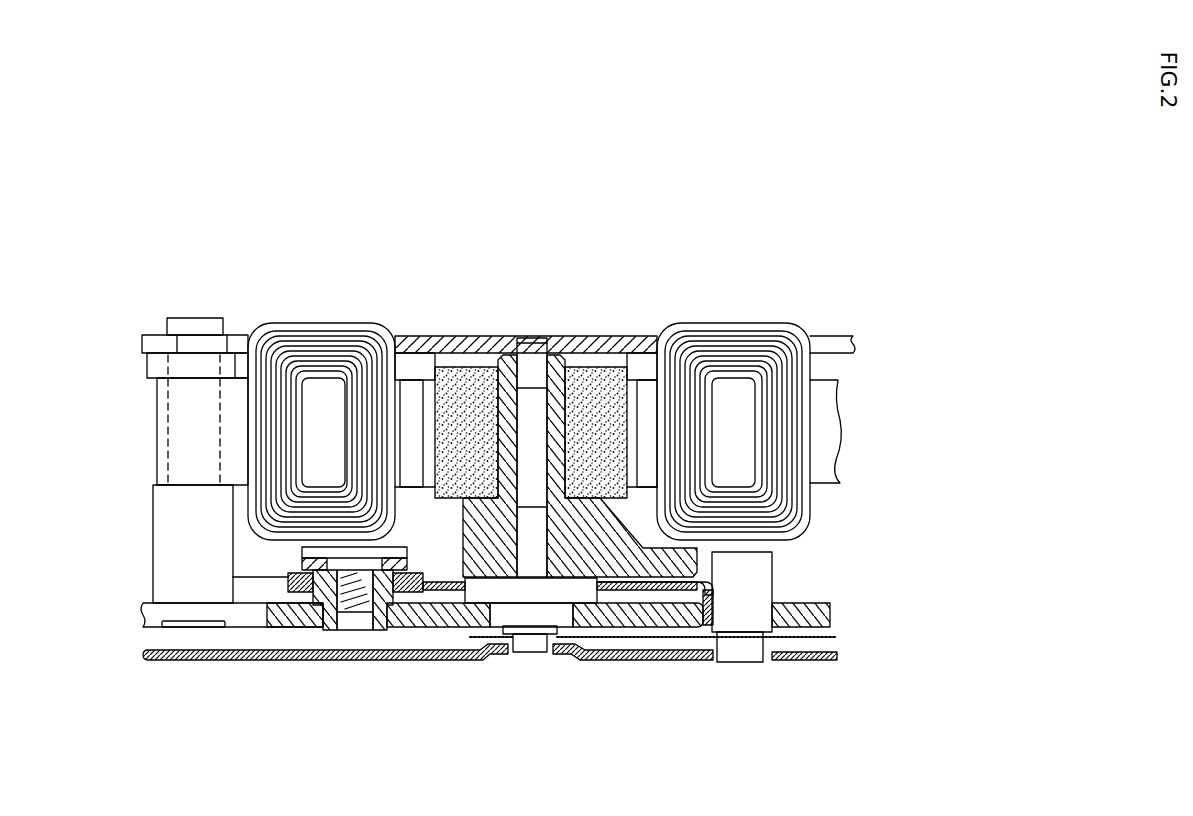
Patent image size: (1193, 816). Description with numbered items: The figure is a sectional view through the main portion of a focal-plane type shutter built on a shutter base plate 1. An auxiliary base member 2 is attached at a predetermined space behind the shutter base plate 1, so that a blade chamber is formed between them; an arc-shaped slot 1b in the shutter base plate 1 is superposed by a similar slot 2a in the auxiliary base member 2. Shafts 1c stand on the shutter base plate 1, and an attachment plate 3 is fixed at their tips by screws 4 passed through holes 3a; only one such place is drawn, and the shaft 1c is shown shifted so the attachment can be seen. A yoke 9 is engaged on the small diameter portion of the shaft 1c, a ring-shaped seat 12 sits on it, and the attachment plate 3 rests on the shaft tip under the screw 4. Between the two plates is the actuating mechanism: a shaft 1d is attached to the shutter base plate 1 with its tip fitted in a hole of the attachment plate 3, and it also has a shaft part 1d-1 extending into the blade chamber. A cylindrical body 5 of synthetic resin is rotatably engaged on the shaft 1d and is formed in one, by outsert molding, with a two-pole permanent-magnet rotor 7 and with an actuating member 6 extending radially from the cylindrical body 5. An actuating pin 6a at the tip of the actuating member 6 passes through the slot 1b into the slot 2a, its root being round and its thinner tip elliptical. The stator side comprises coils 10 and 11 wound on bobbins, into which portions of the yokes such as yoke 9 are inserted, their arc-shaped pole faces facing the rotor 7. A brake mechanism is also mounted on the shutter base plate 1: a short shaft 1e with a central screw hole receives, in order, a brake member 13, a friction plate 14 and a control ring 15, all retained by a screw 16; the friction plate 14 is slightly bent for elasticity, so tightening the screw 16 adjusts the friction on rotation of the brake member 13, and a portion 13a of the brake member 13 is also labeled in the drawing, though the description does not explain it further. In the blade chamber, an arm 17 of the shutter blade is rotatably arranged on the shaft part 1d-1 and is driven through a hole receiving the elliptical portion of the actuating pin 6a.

The shutter base plate 1 is at (148, 603).
The arc-shaped slot 1b is at (773, 603).
The shaft 1c is at (177, 502).
The shaft 1d is at (533, 352).
The shaft part 1d-1 is at (528, 645).
The short shaft 1e is at (397, 627).
The auxiliary base member 2 is at (157, 663).
The slot 2a is at (772, 660).
The attachment plate 3 is at (837, 347).
The hole 3a is at (212, 343).
The screw 4 is at (197, 325).
The cylindrical body 5 is at (507, 337).
The actuating member 6 is at (657, 555).
The actuating pin 6a is at (738, 647).
The rotor 7 is at (588, 375).
The yoke 9 is at (177, 410).
The coil 10 is at (347, 340).
The coil 11 is at (777, 345).
The ring-shaped seat 12 is at (152, 365).
The brake member 13 is at (450, 590).
The flexible printed circuit bent portion 13a is at (708, 630).
The friction plate 14 is at (297, 577).
The control ring 15 is at (412, 568).
The screw 16 is at (392, 545).
The arm 17 is at (607, 643).